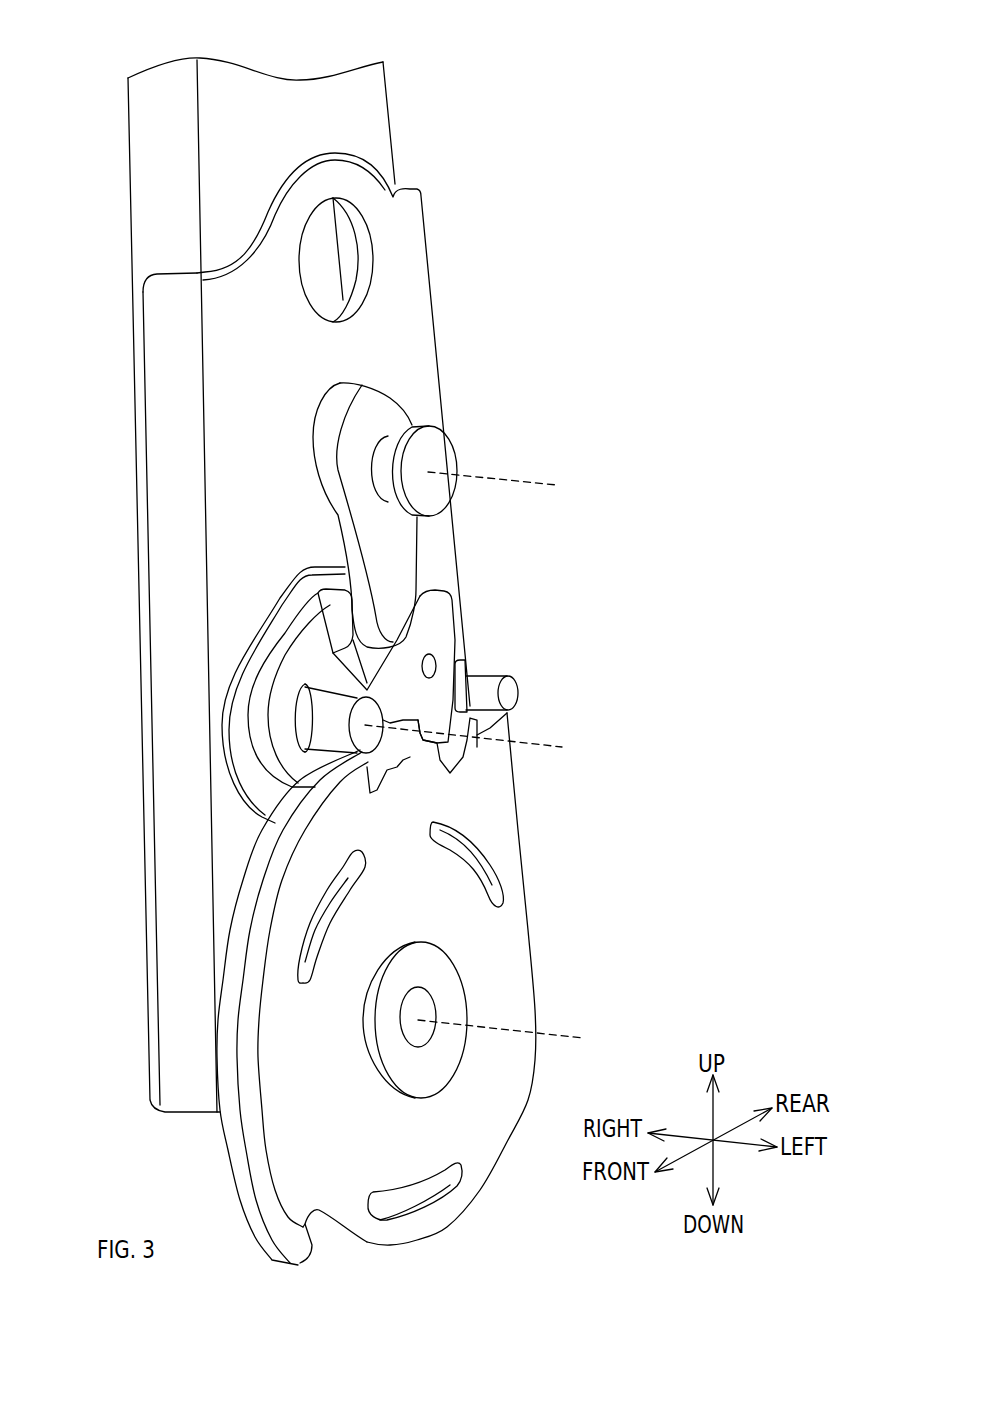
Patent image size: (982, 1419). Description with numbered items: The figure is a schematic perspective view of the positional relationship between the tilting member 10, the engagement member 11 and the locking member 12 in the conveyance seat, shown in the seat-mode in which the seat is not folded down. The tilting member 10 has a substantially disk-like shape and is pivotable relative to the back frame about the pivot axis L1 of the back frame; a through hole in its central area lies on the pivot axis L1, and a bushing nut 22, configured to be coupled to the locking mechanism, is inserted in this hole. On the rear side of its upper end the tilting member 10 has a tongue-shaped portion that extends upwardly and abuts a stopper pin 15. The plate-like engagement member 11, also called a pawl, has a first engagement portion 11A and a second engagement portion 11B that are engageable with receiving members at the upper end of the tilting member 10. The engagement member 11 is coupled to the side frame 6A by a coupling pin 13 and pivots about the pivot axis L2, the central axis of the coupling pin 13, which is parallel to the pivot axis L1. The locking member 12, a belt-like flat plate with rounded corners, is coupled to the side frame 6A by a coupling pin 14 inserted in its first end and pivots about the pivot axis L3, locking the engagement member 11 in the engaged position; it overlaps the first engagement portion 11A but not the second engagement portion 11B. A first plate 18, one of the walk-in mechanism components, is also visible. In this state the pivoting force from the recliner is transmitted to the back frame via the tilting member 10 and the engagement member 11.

The side frame 6A is at (148, 170).
The first plate 18 is at (425, 352).
The locking member 12 is at (400, 538).
The coupling pin 14 is at (433, 457).
The pivot axis L3 is at (505, 486).
The engagement member 11 is at (232, 645).
The second engagement portion 11B is at (430, 585).
The first engagement portion 11A is at (440, 635).
The stopper pin 15 is at (510, 693).
The coupling pin 13 is at (362, 727).
The pivot axis L2 is at (477, 743).
The tilting member 10 is at (502, 837).
The bushing nut 22 is at (443, 983).
The pivot axis L1 is at (516, 1036).